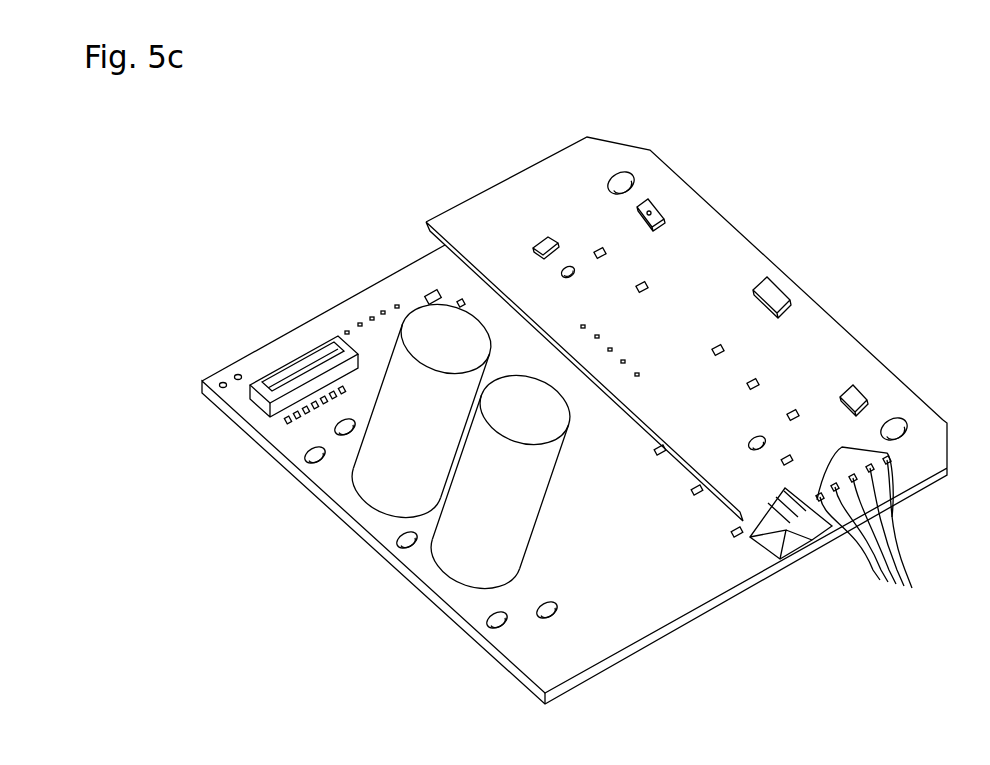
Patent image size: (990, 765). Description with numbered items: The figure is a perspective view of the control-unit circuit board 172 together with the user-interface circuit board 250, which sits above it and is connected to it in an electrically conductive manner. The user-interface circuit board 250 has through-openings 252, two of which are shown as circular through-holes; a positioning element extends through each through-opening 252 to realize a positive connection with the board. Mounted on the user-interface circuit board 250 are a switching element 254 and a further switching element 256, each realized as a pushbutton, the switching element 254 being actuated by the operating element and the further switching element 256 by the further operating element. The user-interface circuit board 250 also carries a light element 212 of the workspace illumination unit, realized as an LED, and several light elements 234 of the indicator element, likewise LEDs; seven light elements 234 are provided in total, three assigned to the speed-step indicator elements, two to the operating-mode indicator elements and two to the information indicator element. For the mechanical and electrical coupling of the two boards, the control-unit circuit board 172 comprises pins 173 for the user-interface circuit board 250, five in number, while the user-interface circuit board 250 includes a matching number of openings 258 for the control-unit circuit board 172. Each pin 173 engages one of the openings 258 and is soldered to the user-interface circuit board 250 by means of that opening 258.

The control-unit circuit board 172 is at (683, 598).
The pin for the user-interface circuit board 173 is at (819, 469).
The light element 212 is at (780, 289).
The light element 234 is at (545, 243).
The user-interface circuit board 250 is at (530, 188).
The through-opening 252 is at (634, 172).
The switching element 254 is at (858, 392).
The further switching element 256 is at (652, 205).
The opening for the control-unit circuit board 258 is at (883, 531).